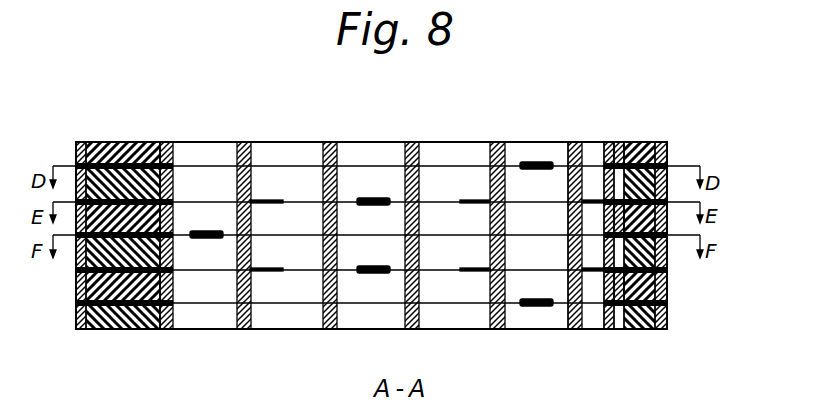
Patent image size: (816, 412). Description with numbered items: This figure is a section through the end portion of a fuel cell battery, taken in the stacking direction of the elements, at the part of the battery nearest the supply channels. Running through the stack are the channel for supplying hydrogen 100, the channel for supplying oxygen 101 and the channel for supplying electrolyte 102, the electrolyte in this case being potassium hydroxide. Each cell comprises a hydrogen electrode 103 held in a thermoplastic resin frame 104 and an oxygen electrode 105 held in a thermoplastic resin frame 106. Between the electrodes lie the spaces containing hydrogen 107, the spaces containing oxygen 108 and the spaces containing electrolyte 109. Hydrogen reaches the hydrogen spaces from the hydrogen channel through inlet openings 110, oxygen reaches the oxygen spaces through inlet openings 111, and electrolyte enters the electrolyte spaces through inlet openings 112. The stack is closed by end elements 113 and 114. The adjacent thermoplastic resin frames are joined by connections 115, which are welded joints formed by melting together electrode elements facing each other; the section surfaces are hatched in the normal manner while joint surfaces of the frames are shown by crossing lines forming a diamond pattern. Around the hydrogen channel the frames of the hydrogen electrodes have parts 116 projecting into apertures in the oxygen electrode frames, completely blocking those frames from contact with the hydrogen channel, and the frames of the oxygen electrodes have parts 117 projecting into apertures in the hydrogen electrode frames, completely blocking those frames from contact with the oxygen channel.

The channel for supplying hydrogen 100 is at (218, 150).
The channel for supplying oxygen 101 is at (522, 150).
The channel for supplying electrolyte 102 is at (390, 153).
The hydrogen electrode 103 is at (663, 265).
The thermoplastic resin frame of the hydrogen electrode 104 is at (669, 240).
The oxygen electrode 105 is at (617, 158).
The thermoplastic resin frame of the oxygen electrode 106 is at (669, 163).
The space containing hydrogen 107 is at (75, 263).
The space containing oxygen 108 is at (102, 142).
The space containing electrolyte 109 is at (161, 148).
The inlet opening for hydrogen 110 is at (207, 238).
The inlet opening for oxygen 111 is at (532, 162).
The inlet opening for electrolyte 112 is at (363, 268).
The end element 113 is at (133, 160).
The end element 114 is at (157, 329).
The connection between thermoplastic resin frames 115 is at (82, 142).
The projecting part of hydrogen electrode frame 116 is at (250, 175).
The projecting part of oxygen electrode frame 117 is at (568, 248).